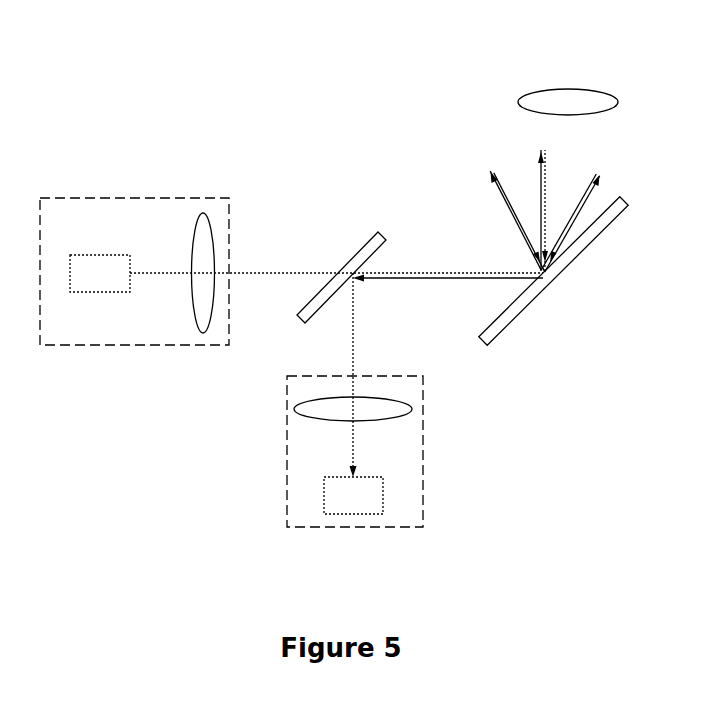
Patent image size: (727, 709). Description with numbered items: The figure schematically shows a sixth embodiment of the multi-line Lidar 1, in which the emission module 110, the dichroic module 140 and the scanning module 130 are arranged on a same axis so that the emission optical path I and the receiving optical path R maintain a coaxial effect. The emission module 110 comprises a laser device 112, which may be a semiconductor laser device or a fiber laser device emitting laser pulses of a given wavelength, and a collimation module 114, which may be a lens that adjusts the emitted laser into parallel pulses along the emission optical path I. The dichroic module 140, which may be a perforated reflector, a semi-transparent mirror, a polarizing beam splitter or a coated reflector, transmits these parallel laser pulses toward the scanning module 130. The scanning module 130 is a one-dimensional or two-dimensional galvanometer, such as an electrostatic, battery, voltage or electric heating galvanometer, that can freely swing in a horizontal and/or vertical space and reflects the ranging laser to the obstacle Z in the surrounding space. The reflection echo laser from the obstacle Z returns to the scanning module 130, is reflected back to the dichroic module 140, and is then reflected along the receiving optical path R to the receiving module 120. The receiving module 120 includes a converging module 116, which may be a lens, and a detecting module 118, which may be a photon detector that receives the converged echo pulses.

The multi-line Lidar 1 is at (188, 95).
The emission module 110 is at (101, 198).
The laser device 112 is at (100, 273).
The collimation module 114 is at (206, 216).
The emission optical path I is at (279, 273).
The dichroic module 140 is at (385, 232).
The receiving optical path R is at (353, 340).
The scanning module 130 is at (510, 322).
The obstacle Z is at (518, 102).
The receiving module 120 is at (400, 527).
The converging module 116 is at (315, 419).
The detecting module 118 is at (353, 495).